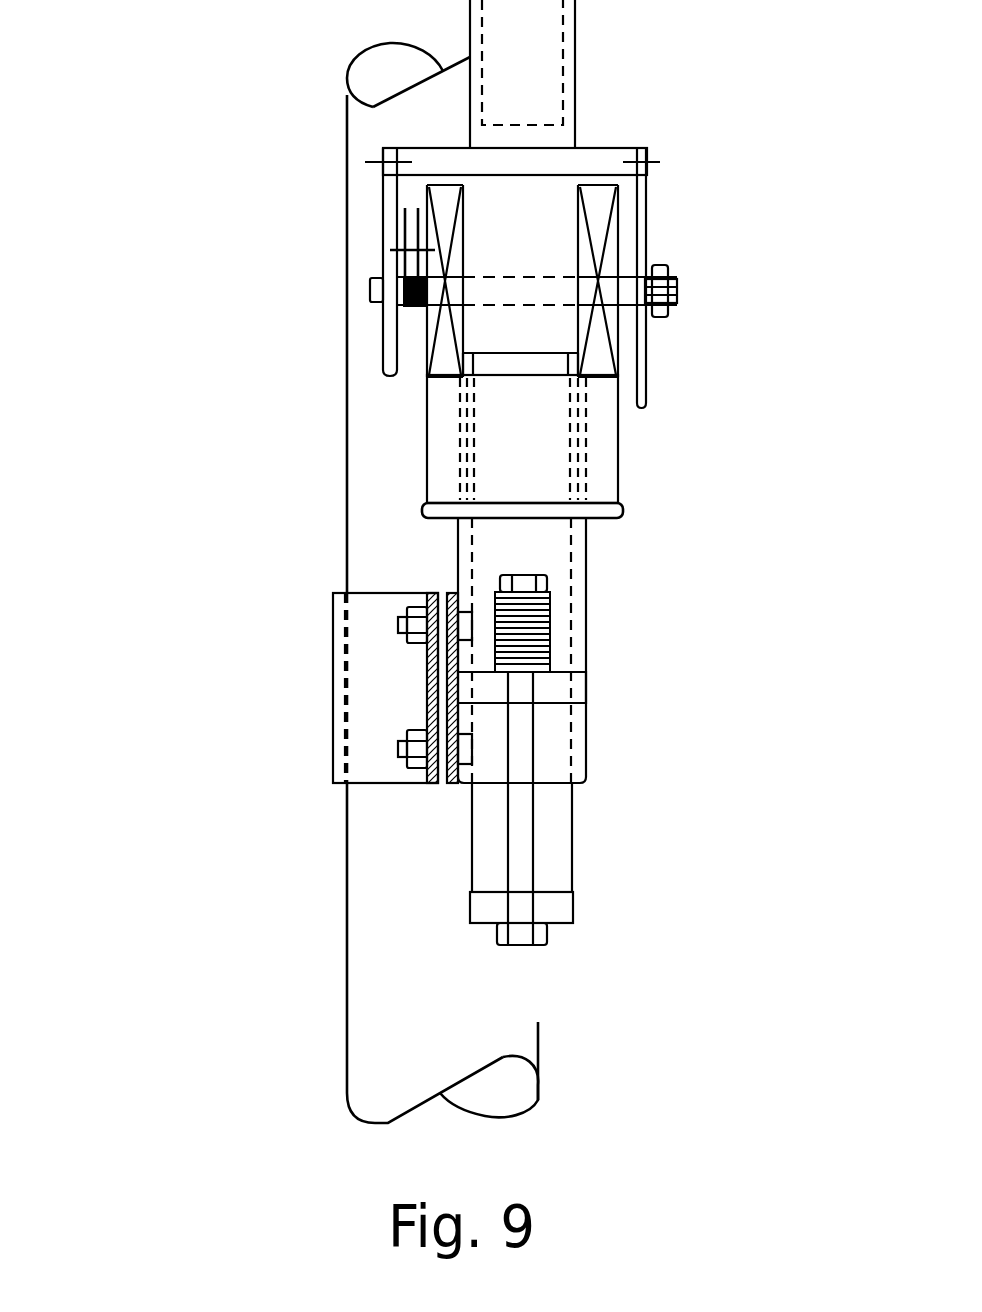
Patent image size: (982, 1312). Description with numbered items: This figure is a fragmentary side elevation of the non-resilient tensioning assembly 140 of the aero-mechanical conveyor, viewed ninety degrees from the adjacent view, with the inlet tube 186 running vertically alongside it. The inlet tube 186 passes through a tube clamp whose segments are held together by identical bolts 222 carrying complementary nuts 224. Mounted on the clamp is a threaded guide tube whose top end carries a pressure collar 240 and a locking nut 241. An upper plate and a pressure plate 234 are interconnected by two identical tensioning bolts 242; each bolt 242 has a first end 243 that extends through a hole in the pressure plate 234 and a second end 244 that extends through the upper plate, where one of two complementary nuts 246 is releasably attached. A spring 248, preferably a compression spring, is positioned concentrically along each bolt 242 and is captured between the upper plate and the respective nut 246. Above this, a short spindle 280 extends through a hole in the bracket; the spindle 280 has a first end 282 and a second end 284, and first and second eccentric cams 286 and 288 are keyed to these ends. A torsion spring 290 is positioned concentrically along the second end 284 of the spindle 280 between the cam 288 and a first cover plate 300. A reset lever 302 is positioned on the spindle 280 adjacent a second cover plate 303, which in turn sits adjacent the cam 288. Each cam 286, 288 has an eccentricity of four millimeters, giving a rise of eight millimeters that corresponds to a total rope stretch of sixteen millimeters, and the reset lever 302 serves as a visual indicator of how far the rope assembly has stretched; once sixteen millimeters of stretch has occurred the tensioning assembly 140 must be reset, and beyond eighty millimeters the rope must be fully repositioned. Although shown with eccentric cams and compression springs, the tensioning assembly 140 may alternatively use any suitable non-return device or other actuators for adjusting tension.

The tensioning assembly 140 is at (667, 850).
The inlet tube 186 is at (347, 478).
The bolts 222 is at (400, 628).
The nuts 224 is at (410, 606).
The pressure plate 234 is at (577, 907).
The pressure collar 240 is at (620, 455).
The locking nut 241 is at (623, 512).
The tensioning bolts 242 is at (473, 795).
The first end 243 is at (507, 867).
The second end 244 is at (535, 690).
The nuts 246 is at (546, 580).
The springs 248 is at (548, 627).
The spindle 280 is at (555, 272).
The first end 282 is at (631, 268).
The second end 284 is at (407, 217).
The first eccentric cam 286 is at (618, 360).
The second eccentric cam 288 is at (427, 364).
The torsion spring 290 is at (373, 278).
The first cover plate 300 is at (383, 330).
The reset lever 302 is at (668, 315).
The second cover plate 303 is at (646, 402).